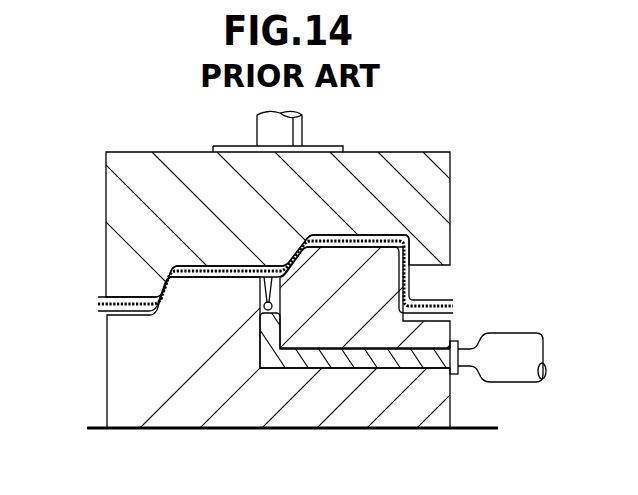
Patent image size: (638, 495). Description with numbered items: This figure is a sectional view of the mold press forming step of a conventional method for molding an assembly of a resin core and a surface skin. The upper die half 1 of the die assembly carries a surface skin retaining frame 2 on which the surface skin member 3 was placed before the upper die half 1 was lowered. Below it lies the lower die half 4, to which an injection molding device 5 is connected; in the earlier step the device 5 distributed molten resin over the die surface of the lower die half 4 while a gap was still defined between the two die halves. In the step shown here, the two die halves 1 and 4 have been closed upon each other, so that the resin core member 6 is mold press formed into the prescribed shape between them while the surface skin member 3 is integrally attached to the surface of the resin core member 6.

The upper die half 1 is at (437, 187).
The surface skin retaining frame 2 is at (128, 297).
The surface skin member 3 is at (268, 276).
The lower die half 4 is at (120, 376).
The injection molding device 5 is at (510, 345).
The resin core member 6 is at (247, 278).